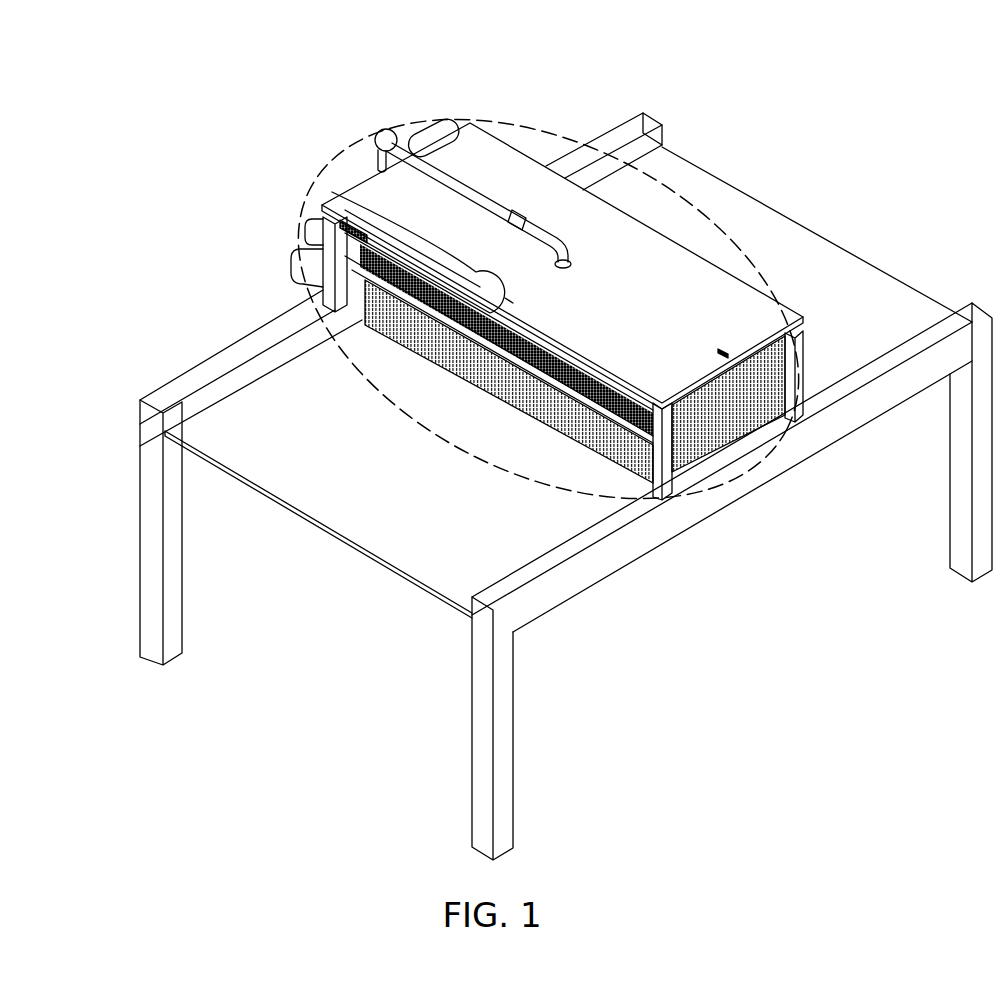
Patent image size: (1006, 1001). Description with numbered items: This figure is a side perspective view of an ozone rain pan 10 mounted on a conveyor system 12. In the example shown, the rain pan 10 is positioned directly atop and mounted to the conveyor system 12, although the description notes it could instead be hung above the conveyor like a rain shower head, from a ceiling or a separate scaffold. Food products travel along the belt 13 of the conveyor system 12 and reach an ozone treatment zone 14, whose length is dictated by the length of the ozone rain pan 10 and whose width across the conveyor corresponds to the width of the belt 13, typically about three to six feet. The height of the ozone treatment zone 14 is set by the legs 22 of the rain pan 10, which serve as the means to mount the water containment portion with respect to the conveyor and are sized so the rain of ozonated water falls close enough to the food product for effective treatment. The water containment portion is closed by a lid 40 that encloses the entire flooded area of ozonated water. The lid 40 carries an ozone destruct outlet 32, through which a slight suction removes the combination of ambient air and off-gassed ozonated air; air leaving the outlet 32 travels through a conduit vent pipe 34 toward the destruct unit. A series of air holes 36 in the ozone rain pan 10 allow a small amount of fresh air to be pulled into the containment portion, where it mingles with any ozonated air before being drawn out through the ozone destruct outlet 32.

The ozone rain pan 10 is at (528, 503).
The conveyor system 12 is at (147, 549).
The belt 13 is at (418, 518).
The ozone treatment zone 14 is at (543, 135).
The legs 22 is at (655, 425).
The ozone destruct outlet 32 is at (572, 258).
The conduit vent pipe 34 is at (377, 138).
The air holes 36 is at (507, 300).
The lid 40 is at (623, 305).